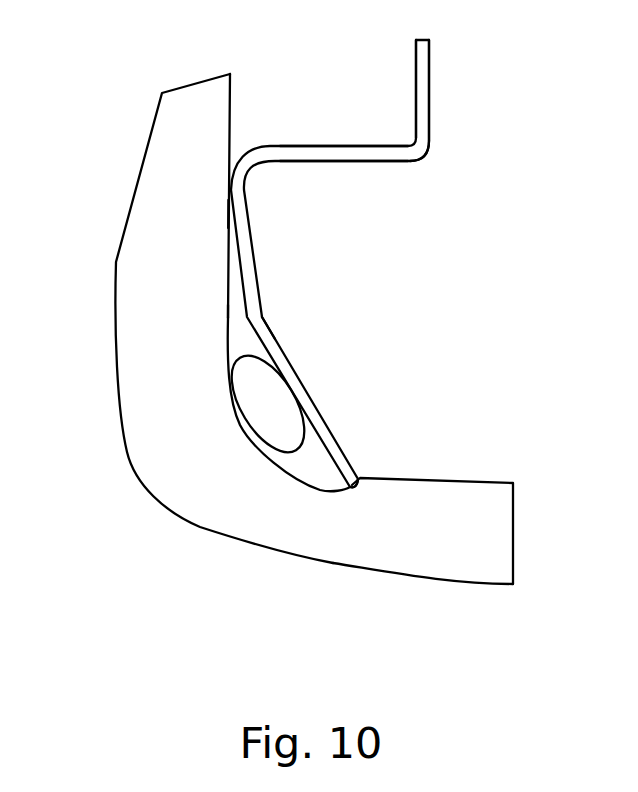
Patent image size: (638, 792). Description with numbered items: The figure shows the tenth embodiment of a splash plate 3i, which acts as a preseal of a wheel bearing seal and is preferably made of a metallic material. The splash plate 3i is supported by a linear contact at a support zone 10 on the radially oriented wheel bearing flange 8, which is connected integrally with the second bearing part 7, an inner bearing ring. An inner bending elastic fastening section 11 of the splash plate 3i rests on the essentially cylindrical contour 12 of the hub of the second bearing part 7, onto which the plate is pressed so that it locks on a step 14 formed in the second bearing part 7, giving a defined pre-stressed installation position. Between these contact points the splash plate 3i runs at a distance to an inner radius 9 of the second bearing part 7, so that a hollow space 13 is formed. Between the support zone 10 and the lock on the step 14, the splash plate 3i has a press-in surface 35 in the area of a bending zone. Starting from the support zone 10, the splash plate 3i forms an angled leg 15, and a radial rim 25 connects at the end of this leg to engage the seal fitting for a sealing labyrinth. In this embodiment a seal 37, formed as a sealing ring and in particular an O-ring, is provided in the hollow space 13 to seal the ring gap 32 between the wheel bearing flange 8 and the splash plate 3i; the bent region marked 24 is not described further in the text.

The wheel bearing flange 8 is at (161, 126).
The support zone 10 is at (229, 185).
The ring gap 32 is at (229, 212).
The fastening section 11 is at (238, 263).
The hollow space 13 is at (235, 316).
The inner radius 9 is at (228, 362).
The seal 37 is at (253, 412).
The angled leg 15 is at (360, 146).
The bent section 24 is at (271, 133).
The radial rim 25 is at (430, 88).
The splash plate 3i is at (435, 148).
The press-in surface 35 is at (263, 317).
The step 14 is at (347, 490).
The second bearing part 7 is at (392, 566).
The cylindrical contour 12 is at (487, 483).